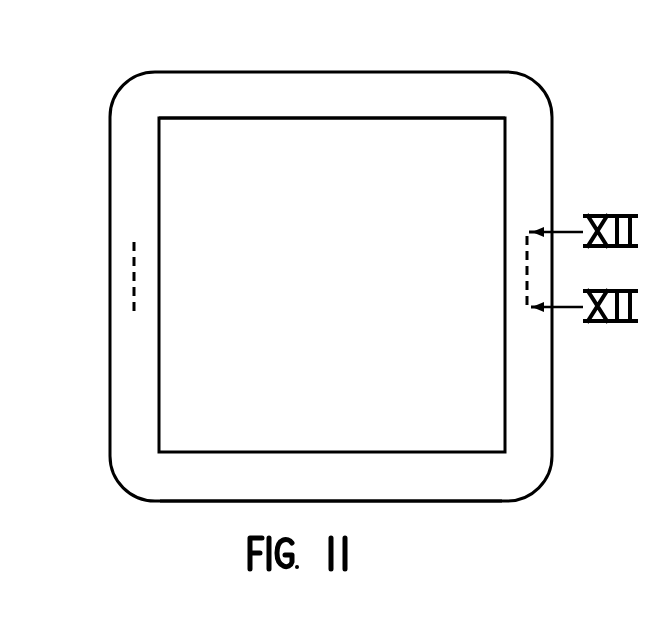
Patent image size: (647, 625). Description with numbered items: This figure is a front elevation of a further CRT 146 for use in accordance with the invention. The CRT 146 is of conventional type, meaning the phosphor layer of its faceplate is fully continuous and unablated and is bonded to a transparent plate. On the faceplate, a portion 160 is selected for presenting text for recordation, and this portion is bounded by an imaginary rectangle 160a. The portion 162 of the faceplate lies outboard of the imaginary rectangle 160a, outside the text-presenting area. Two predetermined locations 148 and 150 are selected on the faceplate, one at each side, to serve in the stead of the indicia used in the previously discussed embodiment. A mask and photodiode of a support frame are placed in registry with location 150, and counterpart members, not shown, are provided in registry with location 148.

The CRT 146 is at (504, 69).
The predetermined location 148 is at (133, 290).
The predetermined location 150 is at (526, 261).
The portion of the faceplate 160 is at (342, 299).
The imaginary rectangle 160a is at (386, 120).
The portion of the faceplate 162 is at (343, 486).